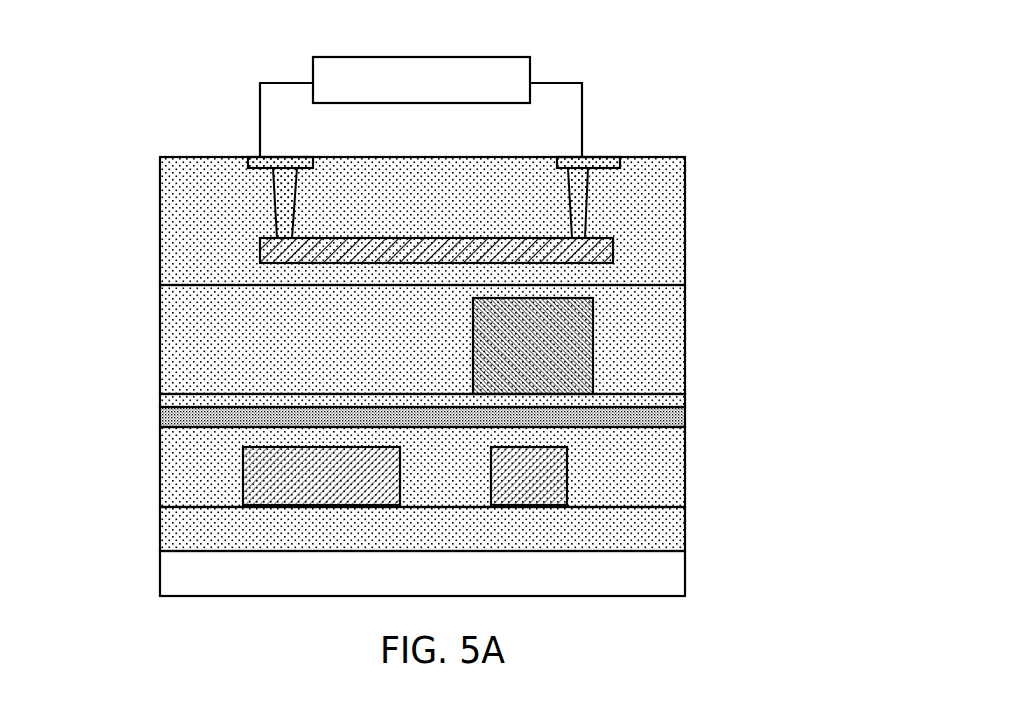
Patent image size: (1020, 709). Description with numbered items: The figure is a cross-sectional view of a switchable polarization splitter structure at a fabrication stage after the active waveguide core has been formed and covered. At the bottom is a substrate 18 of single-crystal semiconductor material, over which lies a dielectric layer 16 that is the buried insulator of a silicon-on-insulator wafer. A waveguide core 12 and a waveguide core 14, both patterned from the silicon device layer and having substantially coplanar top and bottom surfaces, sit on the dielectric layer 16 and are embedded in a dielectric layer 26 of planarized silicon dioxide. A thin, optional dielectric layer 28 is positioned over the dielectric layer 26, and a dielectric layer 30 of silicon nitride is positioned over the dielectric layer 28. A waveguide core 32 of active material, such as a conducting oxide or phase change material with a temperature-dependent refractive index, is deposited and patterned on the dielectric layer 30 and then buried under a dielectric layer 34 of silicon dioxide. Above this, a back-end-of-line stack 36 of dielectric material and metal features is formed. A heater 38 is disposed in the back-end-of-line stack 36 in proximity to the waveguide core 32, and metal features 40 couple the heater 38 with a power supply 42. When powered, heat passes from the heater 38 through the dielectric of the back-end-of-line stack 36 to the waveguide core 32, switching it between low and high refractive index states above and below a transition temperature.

The waveguide core 12 is at (293, 478).
The waveguide core 14 is at (537, 488).
The dielectric layer 16 is at (198, 528).
The substrate 18 is at (203, 578).
The dielectric layer 26 is at (660, 450).
The dielectric layer 28 is at (212, 417).
The dielectric layer 30 is at (660, 400).
The waveguide core 32 is at (565, 360).
The dielectric layer 34 is at (210, 323).
The back-end-of-line stack 36 is at (210, 236).
The heater 38 is at (593, 247).
The metal features 40 is at (270, 162).
The power supply 42 is at (530, 67).